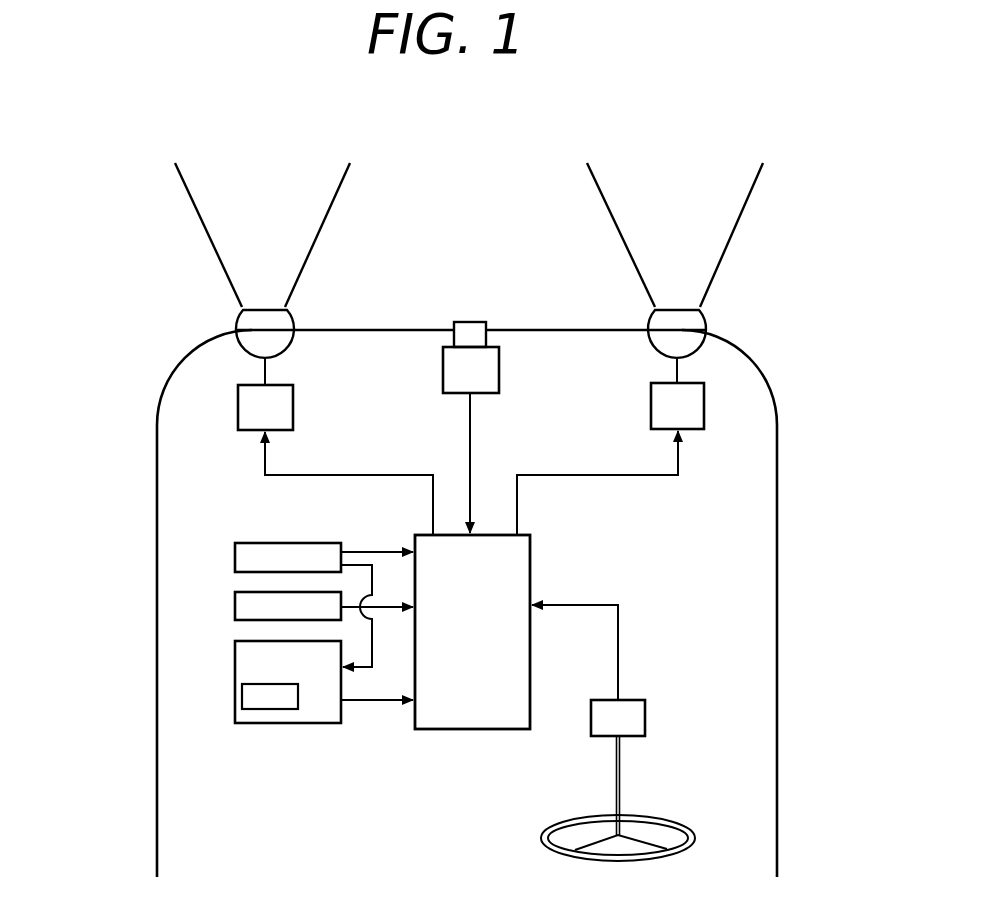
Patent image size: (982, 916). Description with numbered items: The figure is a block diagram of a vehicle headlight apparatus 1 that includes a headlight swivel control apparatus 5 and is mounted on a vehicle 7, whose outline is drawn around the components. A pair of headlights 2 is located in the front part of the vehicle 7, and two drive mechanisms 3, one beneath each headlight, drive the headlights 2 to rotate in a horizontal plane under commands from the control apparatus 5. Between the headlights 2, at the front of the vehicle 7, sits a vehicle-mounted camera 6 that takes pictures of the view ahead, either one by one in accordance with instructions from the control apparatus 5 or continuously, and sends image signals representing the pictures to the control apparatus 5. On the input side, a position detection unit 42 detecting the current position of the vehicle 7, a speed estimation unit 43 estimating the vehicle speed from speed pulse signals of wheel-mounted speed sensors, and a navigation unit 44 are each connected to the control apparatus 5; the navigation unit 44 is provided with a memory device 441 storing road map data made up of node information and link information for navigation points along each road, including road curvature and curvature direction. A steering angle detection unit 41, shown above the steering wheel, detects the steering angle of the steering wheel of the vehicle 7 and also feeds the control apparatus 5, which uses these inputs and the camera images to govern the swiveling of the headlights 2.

The vehicle headlight apparatus 1 is at (476, 143).
The headlights 2 is at (240, 323).
The drive mechanisms 3 is at (238, 405).
The headlight swivel control apparatus 5 is at (455, 729).
The vehicle-mounted camera 6 is at (499, 366).
The vehicle 7 is at (133, 725).
The steering angle detection unit 41 is at (645, 715).
The position detection unit 42 is at (235, 553).
The speed estimation unit 43 is at (235, 603).
The navigation unit 44 is at (235, 662).
The memory device 441 is at (280, 722).